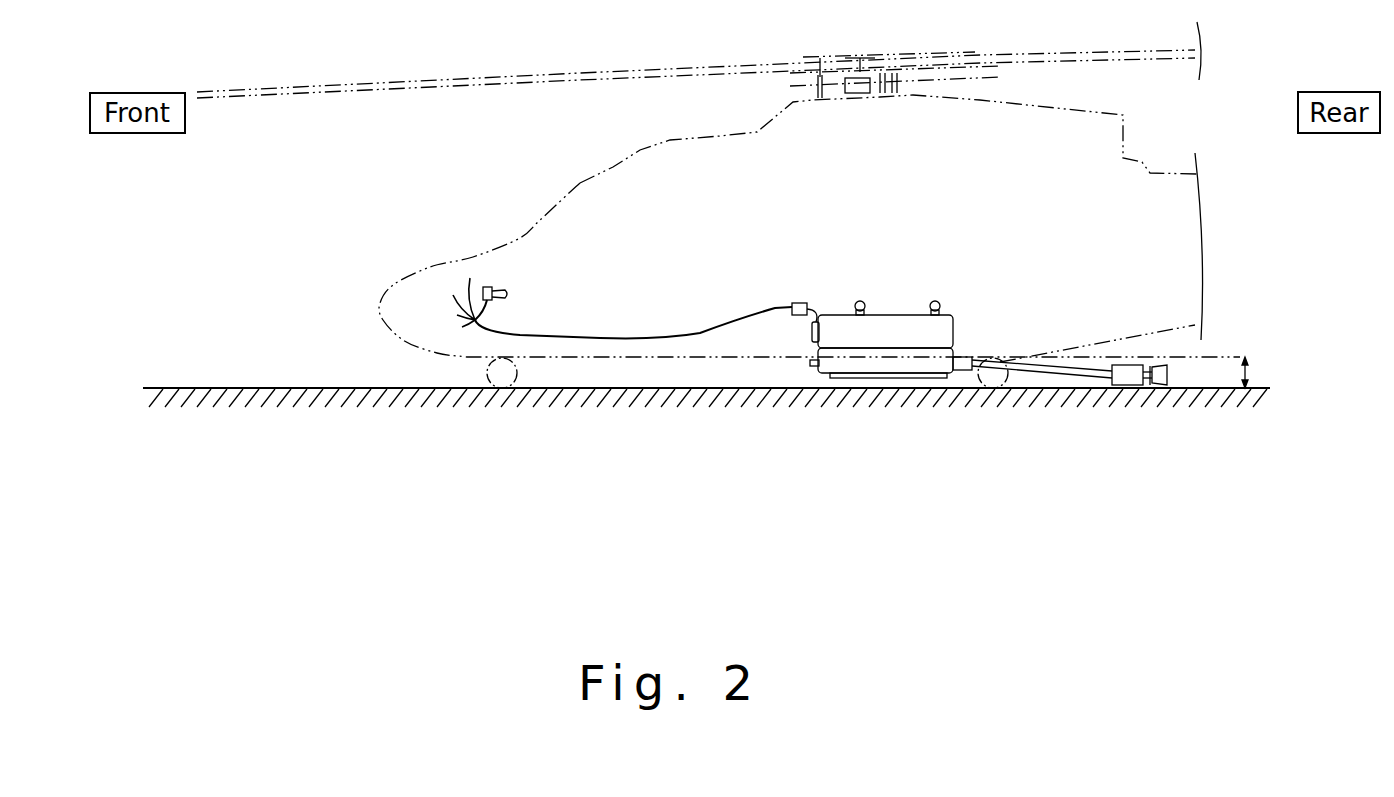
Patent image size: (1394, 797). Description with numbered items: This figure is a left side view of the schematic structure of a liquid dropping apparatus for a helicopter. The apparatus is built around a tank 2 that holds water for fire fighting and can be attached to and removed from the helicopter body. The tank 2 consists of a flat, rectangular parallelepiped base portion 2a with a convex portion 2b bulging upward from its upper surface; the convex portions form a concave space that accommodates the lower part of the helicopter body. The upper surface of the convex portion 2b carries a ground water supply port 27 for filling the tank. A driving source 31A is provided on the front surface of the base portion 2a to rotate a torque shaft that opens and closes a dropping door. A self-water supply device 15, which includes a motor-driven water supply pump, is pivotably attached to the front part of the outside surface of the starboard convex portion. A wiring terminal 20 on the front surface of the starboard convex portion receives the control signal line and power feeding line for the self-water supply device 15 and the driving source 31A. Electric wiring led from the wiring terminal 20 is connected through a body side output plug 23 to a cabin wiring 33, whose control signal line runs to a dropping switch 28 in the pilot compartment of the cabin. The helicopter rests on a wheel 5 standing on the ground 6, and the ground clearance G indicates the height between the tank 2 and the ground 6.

The tank 2 is at (1022, 356).
The base portion 2a is at (878, 360).
The convex portion 2b is at (890, 323).
The wheel 5 is at (489, 388).
The ground 6 is at (203, 388).
The self-water supply device 15 is at (1062, 380).
The wiring terminal 20 is at (815, 337).
The body side output plug 23 is at (797, 317).
The ground water supply port 27 is at (862, 302).
The dropping switch 28 is at (487, 285).
The driving source 31A is at (812, 364).
The cabin wiring 33 is at (587, 338).
The ground clearance G is at (1259, 373).